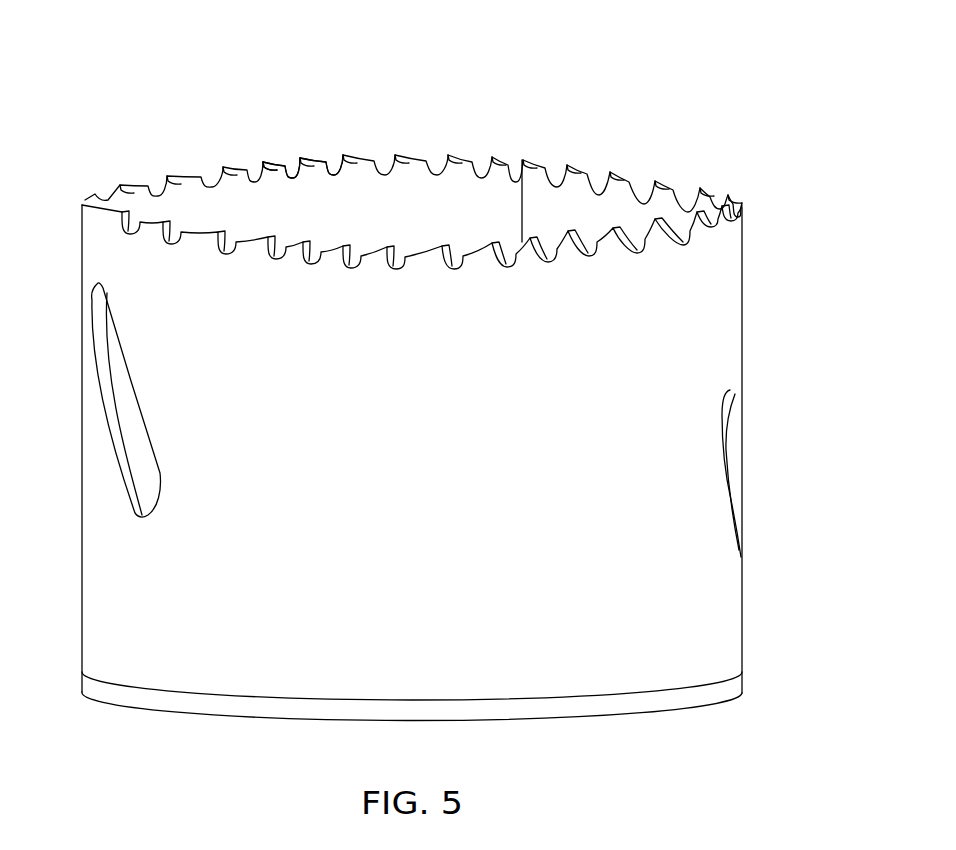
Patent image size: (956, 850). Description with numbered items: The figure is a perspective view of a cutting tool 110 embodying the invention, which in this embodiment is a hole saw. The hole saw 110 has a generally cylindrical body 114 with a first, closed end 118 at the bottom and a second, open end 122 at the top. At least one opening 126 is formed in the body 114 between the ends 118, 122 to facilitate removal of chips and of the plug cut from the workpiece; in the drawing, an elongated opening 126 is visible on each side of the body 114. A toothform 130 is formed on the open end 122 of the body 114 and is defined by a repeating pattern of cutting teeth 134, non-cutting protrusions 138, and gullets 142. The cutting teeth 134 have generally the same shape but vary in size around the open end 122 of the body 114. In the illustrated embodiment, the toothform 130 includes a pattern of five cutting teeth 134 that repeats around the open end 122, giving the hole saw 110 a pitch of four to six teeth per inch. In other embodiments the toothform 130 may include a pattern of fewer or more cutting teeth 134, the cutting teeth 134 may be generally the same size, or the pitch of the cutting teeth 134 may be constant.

The cutting tool 110 is at (423, 378).
The body 114 is at (102, 543).
The first, closed end 118 is at (742, 693).
The second, open end 122 is at (444, 188).
The opening 126 is at (102, 367).
The toothform 130 is at (158, 170).
The cutting teeth 134 is at (270, 178).
The non-cutting protrusions 138 is at (292, 165).
The gullets 142 is at (266, 180).